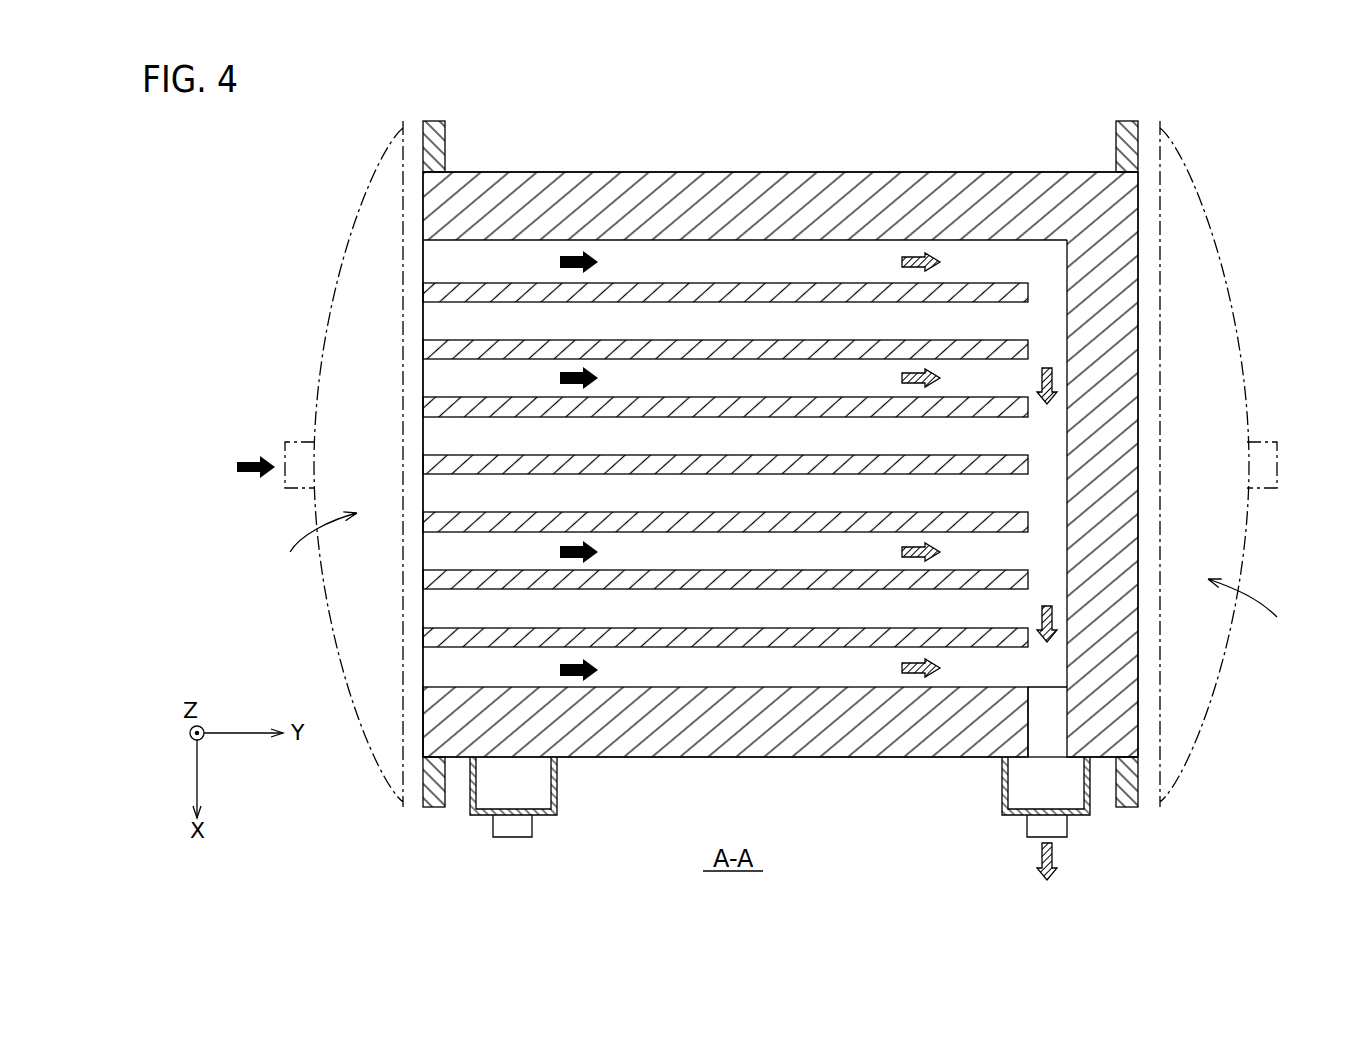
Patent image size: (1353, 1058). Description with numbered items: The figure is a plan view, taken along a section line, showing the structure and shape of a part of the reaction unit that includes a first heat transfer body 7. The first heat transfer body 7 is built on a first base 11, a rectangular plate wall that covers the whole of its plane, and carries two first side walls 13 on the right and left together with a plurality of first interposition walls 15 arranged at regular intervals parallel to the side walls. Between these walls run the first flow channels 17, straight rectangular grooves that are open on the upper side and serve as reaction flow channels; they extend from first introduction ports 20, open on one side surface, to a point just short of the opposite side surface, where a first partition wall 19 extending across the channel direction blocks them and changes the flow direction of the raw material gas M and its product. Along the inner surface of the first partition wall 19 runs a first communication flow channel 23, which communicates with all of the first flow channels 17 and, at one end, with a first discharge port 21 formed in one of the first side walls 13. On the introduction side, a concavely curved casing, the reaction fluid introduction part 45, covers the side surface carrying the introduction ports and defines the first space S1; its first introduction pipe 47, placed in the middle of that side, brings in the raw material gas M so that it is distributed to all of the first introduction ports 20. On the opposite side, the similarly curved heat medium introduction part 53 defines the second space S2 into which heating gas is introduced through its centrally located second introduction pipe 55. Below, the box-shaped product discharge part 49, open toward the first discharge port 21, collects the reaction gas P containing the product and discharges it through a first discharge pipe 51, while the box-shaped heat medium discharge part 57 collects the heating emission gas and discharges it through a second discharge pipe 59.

The first heat transfer body 7 is at (878, 161).
The first base 11 is at (430, 551).
The first side wall 13 is at (641, 175).
The first interposition wall 15 is at (762, 284).
The first flow channel 17 is at (758, 262).
The first partition wall 19 is at (1130, 446).
The first introduction port 20 is at (420, 615).
The first discharge port 21 is at (1033, 727).
The first communication flow channel 23 is at (1048, 503).
The reaction fluid introduction part 45 is at (352, 220).
The first introduction pipe 47 is at (298, 442).
The product discharge part 49 is at (1005, 790).
The first discharge pipe 51 is at (1028, 833).
The heat medium introduction part 53 is at (1210, 224).
The second introduction pipe 55 is at (1271, 442).
The heat medium discharge part 57 is at (558, 780).
The second discharge pipe 59 is at (535, 829).
The raw material gas M is at (248, 460).
The reaction gas P is at (1055, 858).
The first space S1 is at (307, 539).
The second space S2 is at (1261, 607).